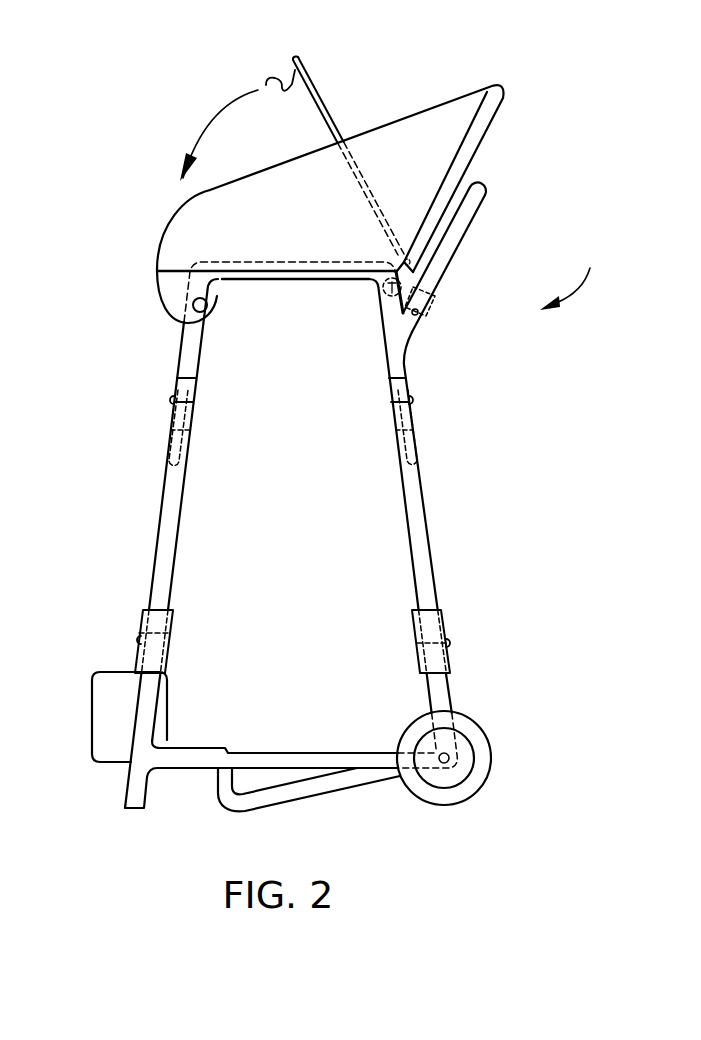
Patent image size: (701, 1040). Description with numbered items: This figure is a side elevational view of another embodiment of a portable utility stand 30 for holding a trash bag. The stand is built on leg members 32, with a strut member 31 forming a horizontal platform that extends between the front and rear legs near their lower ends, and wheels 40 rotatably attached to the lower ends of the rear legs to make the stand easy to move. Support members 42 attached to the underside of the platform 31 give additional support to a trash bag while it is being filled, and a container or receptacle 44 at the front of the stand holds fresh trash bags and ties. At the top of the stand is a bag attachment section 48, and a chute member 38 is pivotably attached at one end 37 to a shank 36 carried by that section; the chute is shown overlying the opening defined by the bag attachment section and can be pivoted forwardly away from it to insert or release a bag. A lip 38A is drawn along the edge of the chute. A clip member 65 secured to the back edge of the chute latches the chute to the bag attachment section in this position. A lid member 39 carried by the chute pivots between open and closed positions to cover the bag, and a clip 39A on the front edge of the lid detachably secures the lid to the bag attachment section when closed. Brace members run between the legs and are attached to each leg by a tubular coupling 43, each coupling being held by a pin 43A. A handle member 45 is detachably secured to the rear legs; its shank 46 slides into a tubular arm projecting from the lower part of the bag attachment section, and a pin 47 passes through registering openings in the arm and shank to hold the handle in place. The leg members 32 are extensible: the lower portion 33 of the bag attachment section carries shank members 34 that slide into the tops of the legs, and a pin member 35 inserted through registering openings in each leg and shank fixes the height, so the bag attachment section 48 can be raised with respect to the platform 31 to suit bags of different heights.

The portable utility stand 30 is at (578, 283).
The strut member 31 is at (187, 773).
The leg members 32 is at (157, 549).
The lower portion of the bag attachment section 33 is at (182, 358).
The shank members 34 is at (175, 431).
The pin member 35 is at (172, 401).
The shank 36 is at (207, 315).
The end of chute member 37 is at (171, 300).
The chute member 38 is at (417, 118).
The panel lip 38A is at (499, 109).
The lid member 39 is at (314, 86).
The clip 39A is at (265, 77).
The wheels 40 is at (481, 735).
The support members 42 is at (283, 790).
The tubular coupling 43 is at (144, 611).
The pin 43A is at (138, 640).
The container or receptacle 44 is at (92, 752).
The handle member 45 is at (488, 192).
The shank 46 is at (424, 307).
The pin 47 is at (418, 309).
The bag attachment section 48 is at (247, 263).
The clip member 65 is at (401, 287).